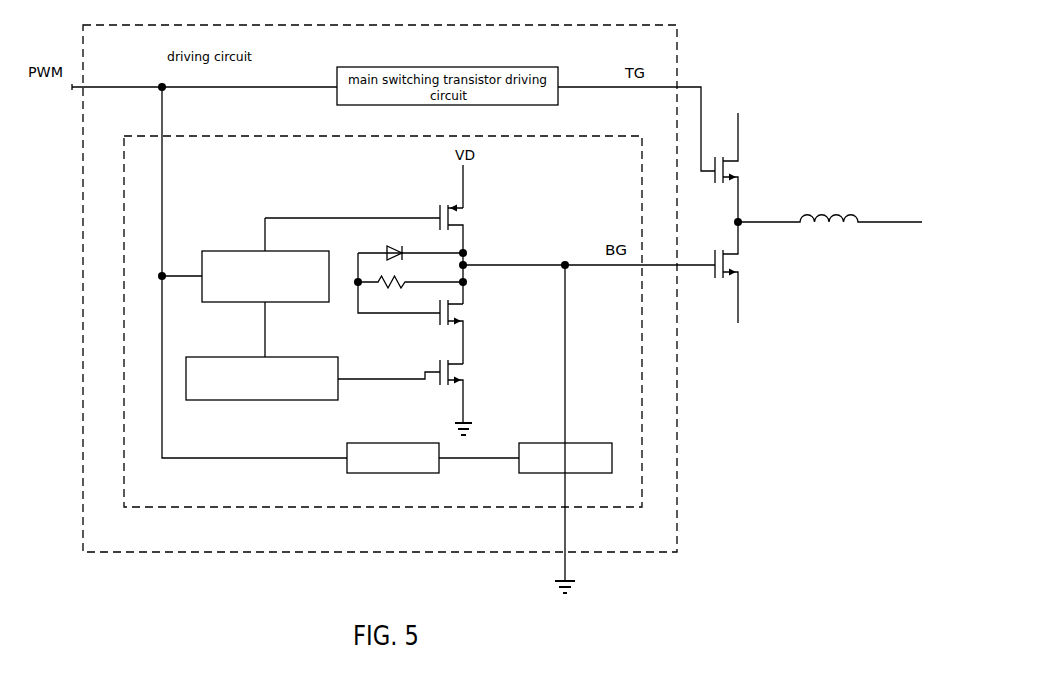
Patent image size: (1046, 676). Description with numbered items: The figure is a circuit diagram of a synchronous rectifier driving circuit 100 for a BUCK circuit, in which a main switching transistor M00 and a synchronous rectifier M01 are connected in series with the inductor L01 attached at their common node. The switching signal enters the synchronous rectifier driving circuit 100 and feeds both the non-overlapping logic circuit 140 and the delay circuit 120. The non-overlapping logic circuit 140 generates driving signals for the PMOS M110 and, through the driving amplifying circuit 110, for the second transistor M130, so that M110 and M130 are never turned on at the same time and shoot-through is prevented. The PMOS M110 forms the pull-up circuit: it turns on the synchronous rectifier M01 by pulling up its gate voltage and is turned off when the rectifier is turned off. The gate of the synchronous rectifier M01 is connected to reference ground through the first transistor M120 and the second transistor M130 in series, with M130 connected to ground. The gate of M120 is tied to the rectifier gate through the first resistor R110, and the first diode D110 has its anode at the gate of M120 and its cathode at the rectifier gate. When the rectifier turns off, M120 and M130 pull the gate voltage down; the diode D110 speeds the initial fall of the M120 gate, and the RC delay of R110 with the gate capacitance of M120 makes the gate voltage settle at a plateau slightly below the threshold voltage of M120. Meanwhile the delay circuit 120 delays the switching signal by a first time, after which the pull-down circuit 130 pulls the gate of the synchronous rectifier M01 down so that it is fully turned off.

The synchronous rectifier driving circuit 100 is at (383, 322).
The driving amplifying circuit 110 is at (262, 378).
The delay circuit 120 is at (393, 459).
The pull-down circuit 130 is at (565, 459).
The non-overlapping logic circuit 140 is at (265, 276).
The main switching transistor M00 is at (744, 167).
The synchronous rectifier M01 is at (744, 272).
The inductor L01 is at (830, 208).
The PMOS pull-up transistor M110 is at (392, 229).
The first transistor M120 is at (480, 332).
The second transistor M130 is at (429, 391).
The first diode D110 is at (410, 244).
The first resistor R110 is at (410, 289).